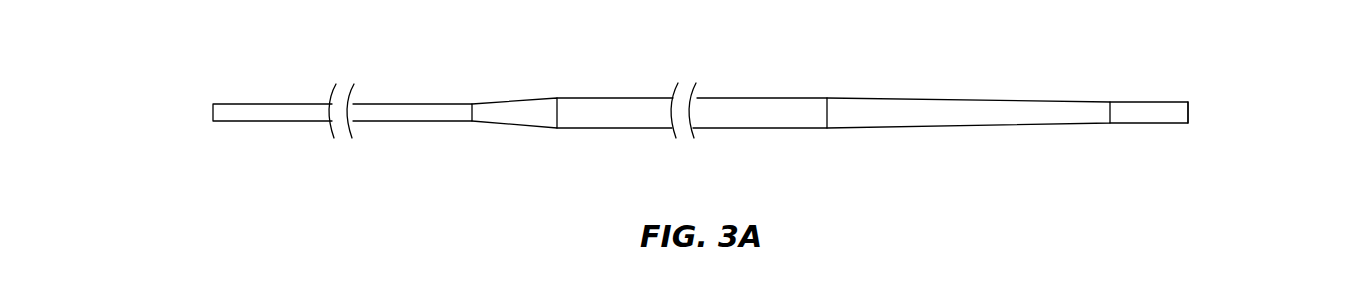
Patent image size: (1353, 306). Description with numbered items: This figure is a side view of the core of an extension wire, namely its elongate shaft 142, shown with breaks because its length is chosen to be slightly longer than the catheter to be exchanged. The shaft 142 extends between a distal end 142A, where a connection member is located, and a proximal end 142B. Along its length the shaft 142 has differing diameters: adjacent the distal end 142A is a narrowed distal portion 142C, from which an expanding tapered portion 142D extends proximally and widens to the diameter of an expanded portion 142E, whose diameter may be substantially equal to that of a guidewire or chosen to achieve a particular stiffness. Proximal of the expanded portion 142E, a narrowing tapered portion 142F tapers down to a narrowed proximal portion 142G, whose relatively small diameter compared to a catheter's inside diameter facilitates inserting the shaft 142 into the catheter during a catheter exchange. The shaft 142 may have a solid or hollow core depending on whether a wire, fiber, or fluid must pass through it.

The shaft 142 is at (877, 98).
The distal end 142A is at (1188, 110).
The proximal end 142B is at (213, 112).
The narrowed distal portion 142C is at (1148, 102).
The expanding tapered portion 142D is at (975, 110).
The expanded portion 142E is at (740, 98).
The narrowing tapered portion 142F is at (512, 99).
The narrowed proximal portion 142G is at (407, 102).